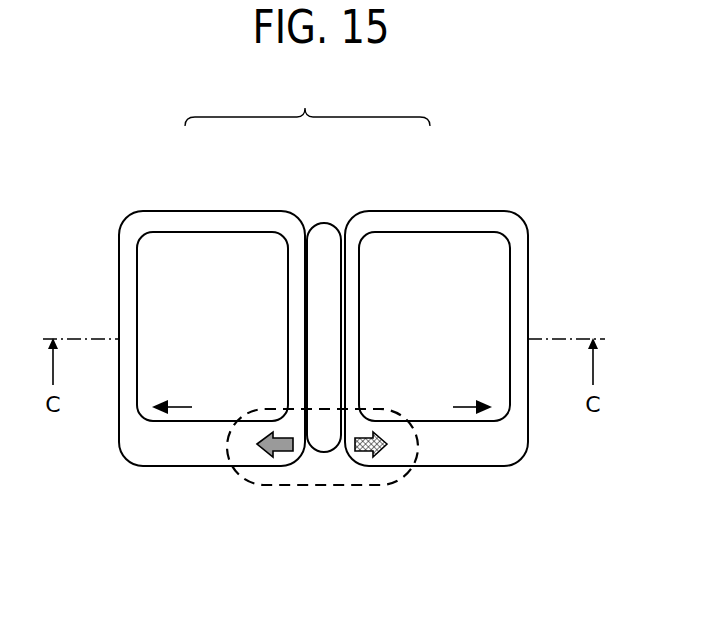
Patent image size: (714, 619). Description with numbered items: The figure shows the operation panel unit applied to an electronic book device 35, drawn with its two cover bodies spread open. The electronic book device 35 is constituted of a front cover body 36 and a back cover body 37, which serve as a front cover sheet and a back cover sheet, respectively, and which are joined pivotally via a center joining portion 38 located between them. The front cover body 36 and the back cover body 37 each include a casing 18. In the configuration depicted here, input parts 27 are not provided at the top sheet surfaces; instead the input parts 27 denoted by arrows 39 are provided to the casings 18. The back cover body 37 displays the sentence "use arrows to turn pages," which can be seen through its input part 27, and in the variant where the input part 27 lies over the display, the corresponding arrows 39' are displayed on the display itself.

The casing 18 is at (134, 232).
The input part 27 is at (141, 276).
The electronic book device 35 is at (307, 102).
The front cover body 36 is at (214, 236).
The back cover body 37 is at (441, 236).
The center joining portion 38 is at (326, 236).
The arrows 39 is at (327, 476).
The arrows displayed in the display part 39' is at (329, 464).